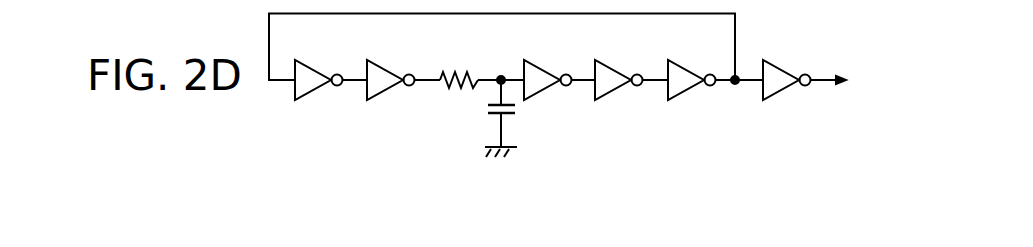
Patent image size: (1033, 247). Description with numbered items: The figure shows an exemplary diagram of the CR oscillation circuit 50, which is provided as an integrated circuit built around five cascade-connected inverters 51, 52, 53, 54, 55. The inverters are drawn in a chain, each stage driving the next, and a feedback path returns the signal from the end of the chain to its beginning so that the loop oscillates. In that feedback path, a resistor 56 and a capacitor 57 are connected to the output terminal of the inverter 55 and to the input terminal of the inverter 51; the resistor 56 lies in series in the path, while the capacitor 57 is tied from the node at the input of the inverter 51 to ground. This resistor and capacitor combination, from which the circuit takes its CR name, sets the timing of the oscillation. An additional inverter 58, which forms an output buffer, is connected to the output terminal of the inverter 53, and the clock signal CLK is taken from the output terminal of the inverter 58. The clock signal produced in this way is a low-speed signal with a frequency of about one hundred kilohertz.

The CR oscillation circuit 50 is at (581, 110).
The inverter 51 is at (535, 94).
The inverter 52 is at (604, 95).
The inverter 53 is at (680, 94).
The inverter 54 is at (301, 96).
The inverter 55 is at (378, 95).
The resistor 56 is at (466, 72).
The capacitor 57 is at (488, 107).
The inverter 58 is at (785, 72).